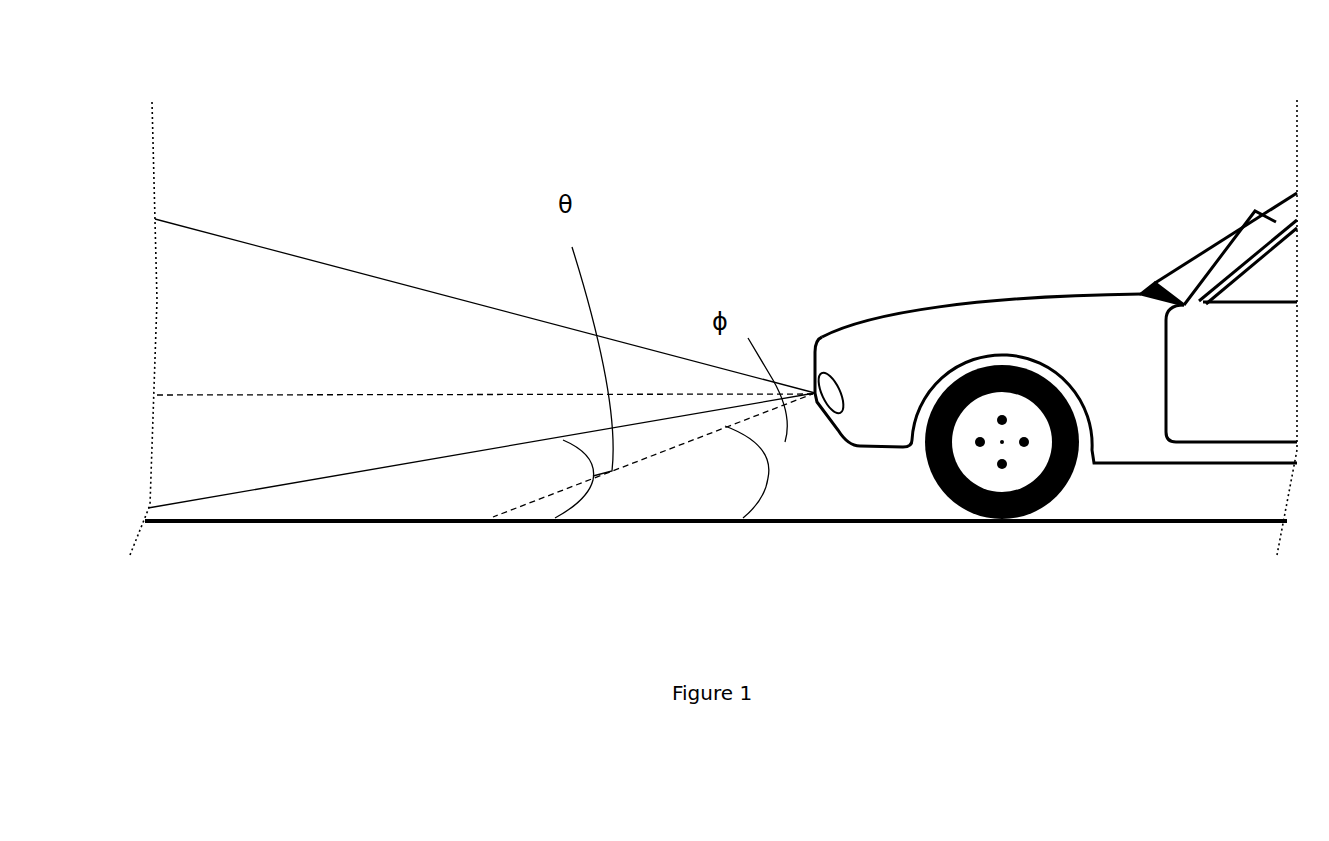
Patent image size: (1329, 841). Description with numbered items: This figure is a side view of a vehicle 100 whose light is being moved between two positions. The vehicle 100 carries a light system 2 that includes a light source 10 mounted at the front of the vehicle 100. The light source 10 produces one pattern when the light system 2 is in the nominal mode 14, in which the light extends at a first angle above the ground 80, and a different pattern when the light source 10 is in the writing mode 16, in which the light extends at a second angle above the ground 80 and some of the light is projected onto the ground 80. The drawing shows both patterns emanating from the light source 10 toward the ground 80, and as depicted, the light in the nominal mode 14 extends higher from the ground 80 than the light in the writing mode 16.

The light system 2 is at (825, 343).
The light source 10 is at (830, 390).
The nominal mode 14 is at (388, 279).
The writing mode 16 is at (661, 393).
The ground 80 is at (420, 523).
The vehicle 100 is at (952, 313).